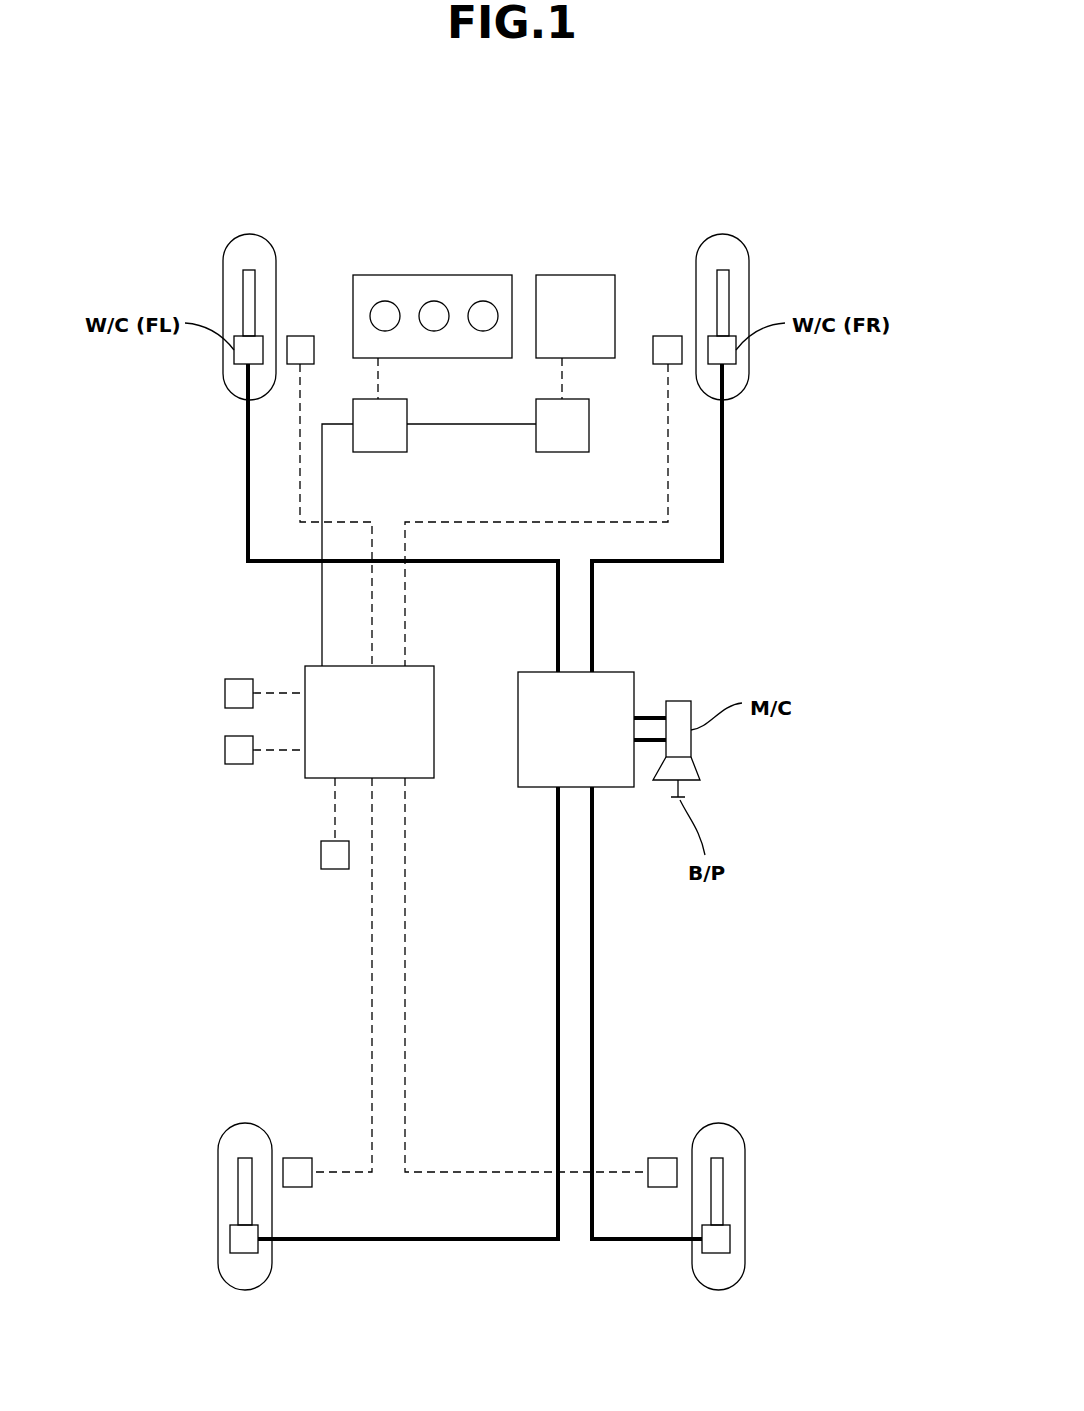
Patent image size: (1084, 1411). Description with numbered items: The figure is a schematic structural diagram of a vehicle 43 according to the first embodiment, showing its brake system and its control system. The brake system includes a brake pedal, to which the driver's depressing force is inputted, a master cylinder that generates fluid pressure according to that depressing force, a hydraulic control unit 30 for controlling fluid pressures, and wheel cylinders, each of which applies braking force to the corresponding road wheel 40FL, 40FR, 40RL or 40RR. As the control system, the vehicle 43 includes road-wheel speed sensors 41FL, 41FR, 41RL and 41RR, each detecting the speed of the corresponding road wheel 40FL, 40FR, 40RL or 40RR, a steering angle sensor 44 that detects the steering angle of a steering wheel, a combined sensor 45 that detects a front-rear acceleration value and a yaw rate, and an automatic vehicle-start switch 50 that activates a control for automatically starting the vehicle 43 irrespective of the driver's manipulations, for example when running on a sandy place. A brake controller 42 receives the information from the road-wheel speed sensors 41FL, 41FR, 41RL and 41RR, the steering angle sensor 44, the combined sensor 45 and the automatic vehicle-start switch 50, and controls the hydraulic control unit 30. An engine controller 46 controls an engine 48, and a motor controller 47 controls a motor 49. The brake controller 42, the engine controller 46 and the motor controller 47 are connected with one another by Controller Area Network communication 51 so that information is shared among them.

The hydraulic control unit 30 is at (634, 684).
The front-left road wheel 40FL is at (228, 250).
The front-right road wheel 40FR is at (745, 250).
The rear-left road wheel 40RL is at (225, 1135).
The rear-right road wheel 40RR is at (738, 1133).
The front-left road-wheel speed sensor 41FL is at (300, 336).
The front-right road-wheel speed sensor 41FR is at (670, 336).
The rear-left road-wheel speed sensor 41RL is at (298, 1158).
The rear-right road-wheel speed sensor 41RR is at (663, 1158).
The brake controller 42 is at (305, 678).
The vehicle 43 is at (845, 223).
The steering angle sensor 44 is at (225, 693).
The combined sensor 45 is at (225, 750).
The engine controller 46 is at (407, 437).
The motor controller 47 is at (589, 437).
The engine 48 is at (432, 275).
The motor 49 is at (572, 275).
The automatic vehicle-start switch 50 is at (321, 856).
The Controller Area Network communication 51 is at (322, 586).